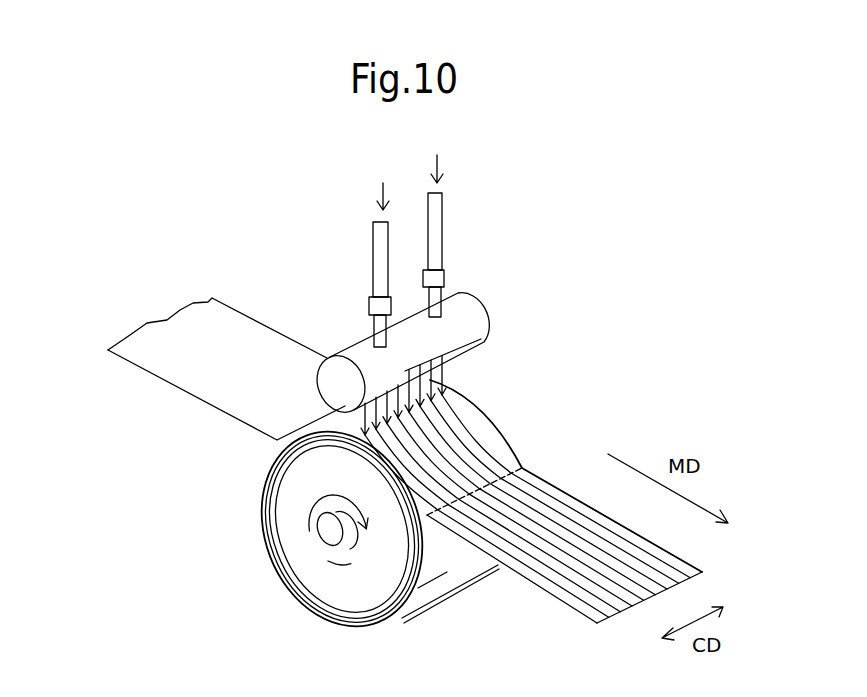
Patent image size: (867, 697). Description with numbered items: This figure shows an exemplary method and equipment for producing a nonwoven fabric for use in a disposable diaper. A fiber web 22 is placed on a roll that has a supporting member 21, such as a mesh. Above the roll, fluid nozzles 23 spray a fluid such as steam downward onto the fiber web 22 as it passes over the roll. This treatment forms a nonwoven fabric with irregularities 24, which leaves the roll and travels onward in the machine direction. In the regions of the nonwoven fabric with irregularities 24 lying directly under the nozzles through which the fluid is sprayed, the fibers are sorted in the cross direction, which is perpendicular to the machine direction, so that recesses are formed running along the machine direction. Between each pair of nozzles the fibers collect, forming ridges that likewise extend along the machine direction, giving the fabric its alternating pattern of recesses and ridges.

The supporting member 21 is at (237, 502).
The fiber web 22 is at (137, 348).
The fluid nozzles 23 is at (470, 318).
The nonwoven fabric with irregularities 24 is at (592, 613).